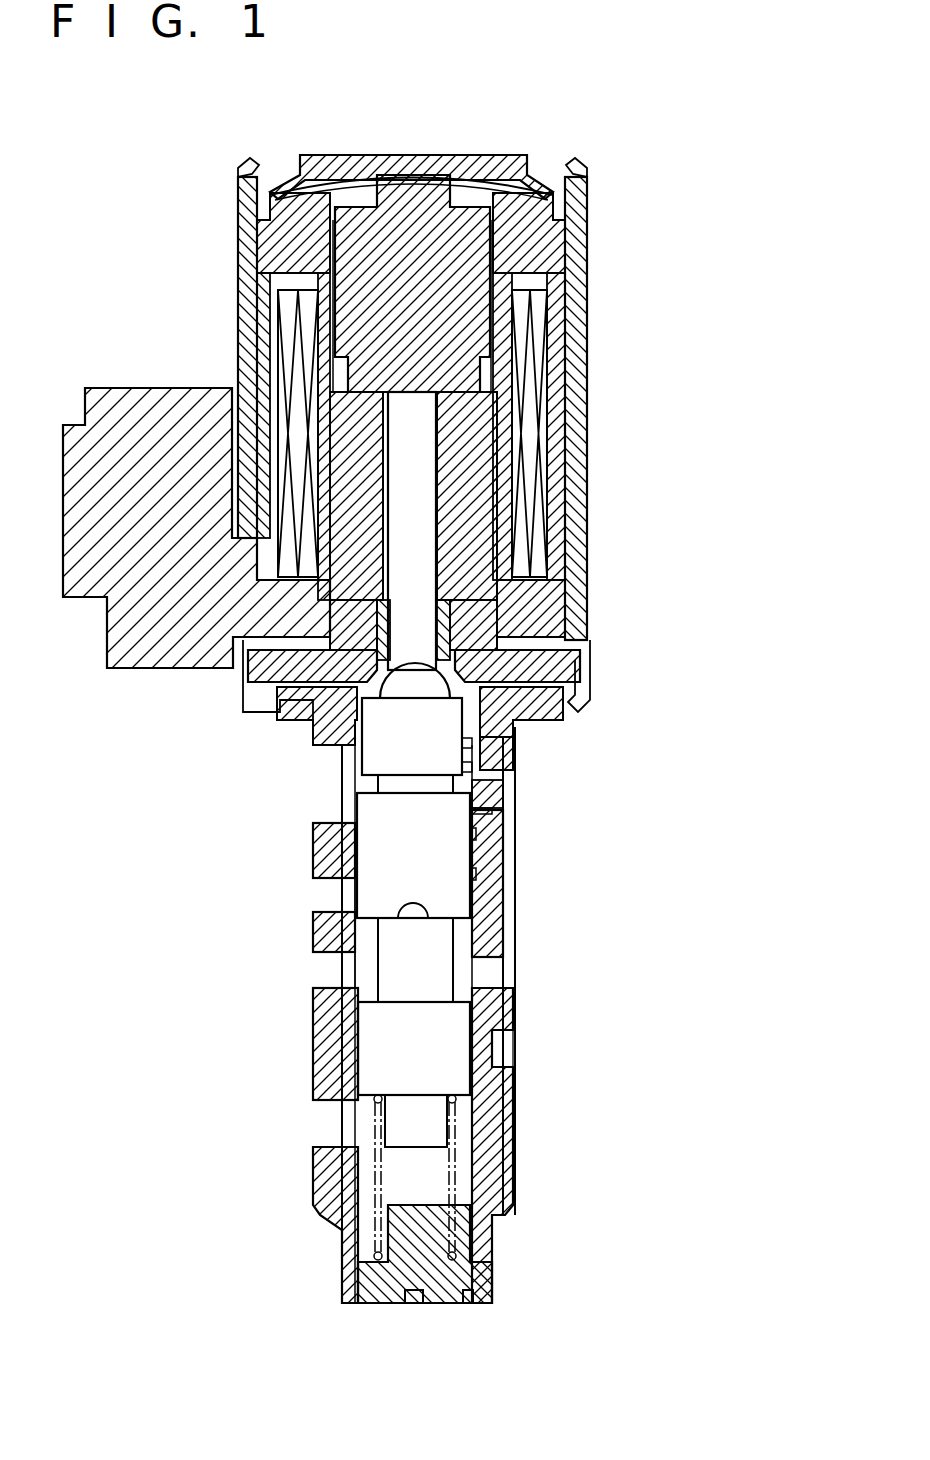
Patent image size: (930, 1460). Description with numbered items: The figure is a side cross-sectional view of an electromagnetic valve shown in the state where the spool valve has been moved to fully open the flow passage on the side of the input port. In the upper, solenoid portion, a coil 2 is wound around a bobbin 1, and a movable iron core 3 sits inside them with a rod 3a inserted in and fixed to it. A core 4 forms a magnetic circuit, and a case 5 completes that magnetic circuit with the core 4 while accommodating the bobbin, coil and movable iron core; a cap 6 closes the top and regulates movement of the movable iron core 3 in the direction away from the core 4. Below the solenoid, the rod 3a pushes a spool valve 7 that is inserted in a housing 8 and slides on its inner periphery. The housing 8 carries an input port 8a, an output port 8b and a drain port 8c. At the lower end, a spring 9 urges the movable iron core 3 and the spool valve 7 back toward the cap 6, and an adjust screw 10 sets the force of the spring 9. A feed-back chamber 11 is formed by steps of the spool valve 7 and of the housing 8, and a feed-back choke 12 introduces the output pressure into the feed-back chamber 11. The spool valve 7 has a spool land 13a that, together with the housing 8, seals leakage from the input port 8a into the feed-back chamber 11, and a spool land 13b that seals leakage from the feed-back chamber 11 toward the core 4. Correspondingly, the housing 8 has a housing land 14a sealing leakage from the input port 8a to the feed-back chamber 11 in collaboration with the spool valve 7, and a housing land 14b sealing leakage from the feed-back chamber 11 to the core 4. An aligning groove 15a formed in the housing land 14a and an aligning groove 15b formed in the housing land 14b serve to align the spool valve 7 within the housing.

The bobbin 1 is at (107, 412).
The coil 2 is at (292, 402).
The movable iron core 3 is at (450, 315).
The rod 3a is at (420, 510).
The core 4 is at (540, 672).
The case 5 is at (250, 238).
The cap 6 is at (298, 163).
The spool valve 7 is at (450, 1085).
The housing 8 is at (323, 1163).
The input port 8a is at (330, 898).
The output port 8b is at (333, 970).
The drain port 8c is at (495, 1045).
The spring 9 is at (500, 1178).
The adjust screw 10 is at (395, 1272).
The feed-back chamber 11 is at (467, 783).
The feed-back choke 12 is at (473, 813).
The spool land 13a is at (375, 855).
The spool land 13b is at (385, 745).
The housing land 14a is at (483, 833).
The housing land 14b is at (470, 742).
The aligning groove 15a is at (483, 873).
The aligning groove 15b is at (473, 768).